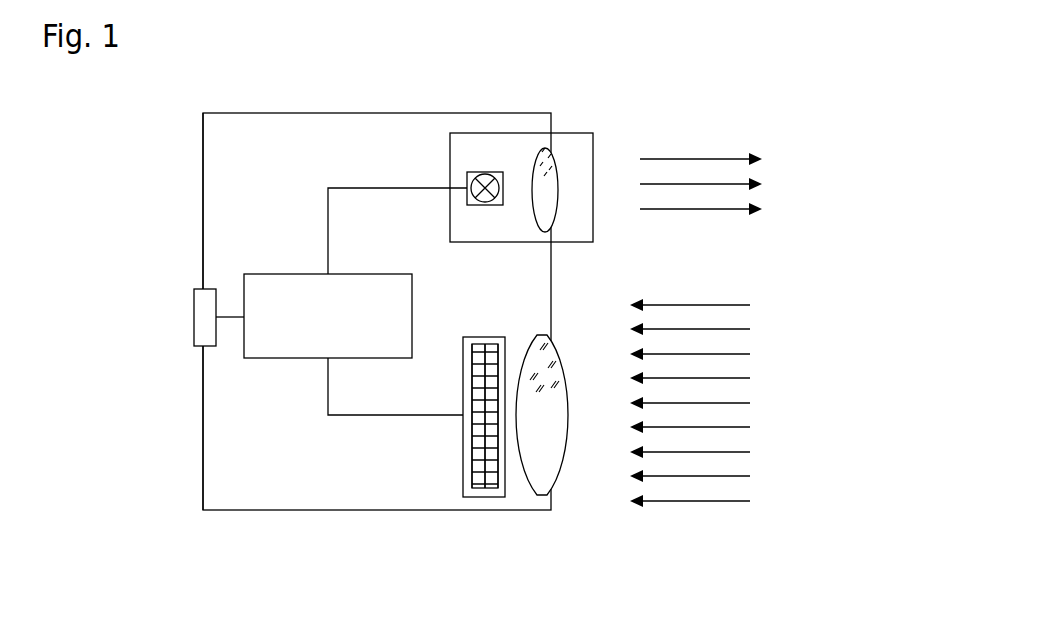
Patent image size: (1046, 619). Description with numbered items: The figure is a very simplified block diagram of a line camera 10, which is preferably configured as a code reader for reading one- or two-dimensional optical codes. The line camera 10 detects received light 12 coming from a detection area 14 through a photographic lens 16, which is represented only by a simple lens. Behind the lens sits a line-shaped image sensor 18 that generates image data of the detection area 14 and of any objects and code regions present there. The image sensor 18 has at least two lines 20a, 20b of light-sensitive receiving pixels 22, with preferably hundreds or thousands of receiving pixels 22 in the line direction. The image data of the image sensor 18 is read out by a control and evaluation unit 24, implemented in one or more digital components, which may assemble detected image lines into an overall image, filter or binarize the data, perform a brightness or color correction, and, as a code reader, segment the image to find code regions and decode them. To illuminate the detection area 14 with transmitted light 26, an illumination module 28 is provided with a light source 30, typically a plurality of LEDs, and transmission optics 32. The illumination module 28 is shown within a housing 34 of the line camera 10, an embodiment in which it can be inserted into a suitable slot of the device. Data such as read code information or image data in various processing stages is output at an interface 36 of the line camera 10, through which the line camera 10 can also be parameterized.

The line camera 10 is at (347, 87).
The received light 12 is at (685, 512).
The detection area 14 is at (910, 188).
The photographic lens 16 is at (555, 460).
The image sensor 18 is at (462, 452).
The line of receiving pixels 20a is at (478, 482).
The line of receiving pixels 20b is at (492, 480).
The receiving pixels 22 is at (475, 385).
The control and evaluation unit 24 is at (303, 305).
The transmitted light 26 is at (683, 152).
The illumination module 28 is at (453, 133).
The light source 30 is at (480, 172).
The transmission optics 32 is at (555, 175).
The housing 34 is at (204, 438).
The interface 36 is at (196, 313).